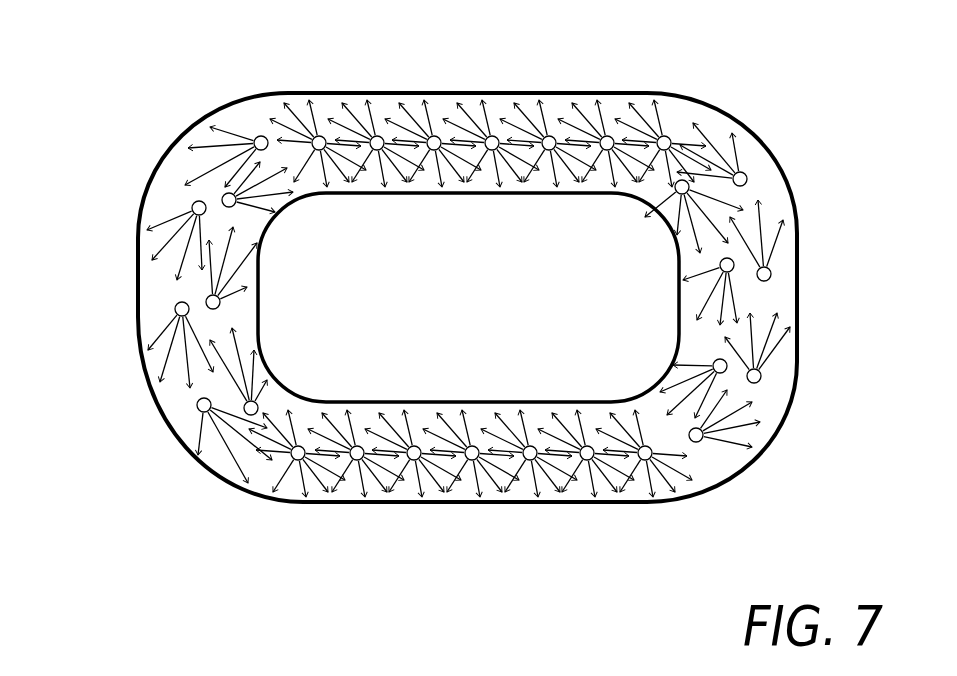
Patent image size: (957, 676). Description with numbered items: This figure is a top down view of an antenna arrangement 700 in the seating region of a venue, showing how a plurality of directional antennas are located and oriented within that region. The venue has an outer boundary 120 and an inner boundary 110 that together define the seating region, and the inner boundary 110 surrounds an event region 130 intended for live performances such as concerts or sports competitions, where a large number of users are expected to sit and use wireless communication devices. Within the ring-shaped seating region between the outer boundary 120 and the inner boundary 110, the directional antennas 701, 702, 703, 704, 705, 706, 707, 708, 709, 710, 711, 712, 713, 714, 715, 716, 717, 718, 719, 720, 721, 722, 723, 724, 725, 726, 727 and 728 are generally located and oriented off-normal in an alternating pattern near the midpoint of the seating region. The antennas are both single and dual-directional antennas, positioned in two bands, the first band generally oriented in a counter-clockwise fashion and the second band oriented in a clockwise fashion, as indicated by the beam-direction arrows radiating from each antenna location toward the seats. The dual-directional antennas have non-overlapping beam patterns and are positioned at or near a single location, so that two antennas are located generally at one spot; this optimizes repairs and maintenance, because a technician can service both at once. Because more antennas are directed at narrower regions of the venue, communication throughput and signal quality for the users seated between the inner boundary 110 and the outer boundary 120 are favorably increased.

The mesh network system 700 is at (103, 80).
The outer boundary 120 is at (708, 102).
The inner boundary 110 is at (258, 260).
The event region 130 is at (418, 283).
The directional antenna 701 is at (319, 136).
The directional antenna 702 is at (377, 136).
The directional antenna 703 is at (435, 136).
The directional antenna 704 is at (493, 136).
The directional antenna 705 is at (550, 136).
The directional antenna 706 is at (608, 136).
The directional antenna 707 is at (666, 137).
The directional antenna 708 is at (676, 192).
The directional antenna 709 is at (746, 173).
The directional antenna 710 is at (771, 273).
The directional antenna 711 is at (720, 265).
The directional antenna 712 is at (761, 376).
The directional antenna 713 is at (714, 362).
The directional antenna 714 is at (702, 441).
The directional antenna 715 is at (645, 460).
The directional antenna 716 is at (587, 460).
The directional antenna 717 is at (530, 460).
The directional antenna 718 is at (472, 460).
The directional antenna 719 is at (414, 460).
The directional antenna 720 is at (357, 460).
The directional antenna 721 is at (298, 460).
The directional antenna 722 is at (198, 410).
The directional antenna 723 is at (258, 405).
The directional antenna 724 is at (175, 309).
The directional antenna 725 is at (221, 304).
The directional antenna 726 is at (235, 205).
The directional antenna 727 is at (192, 207).
The directional antenna 728 is at (255, 138).